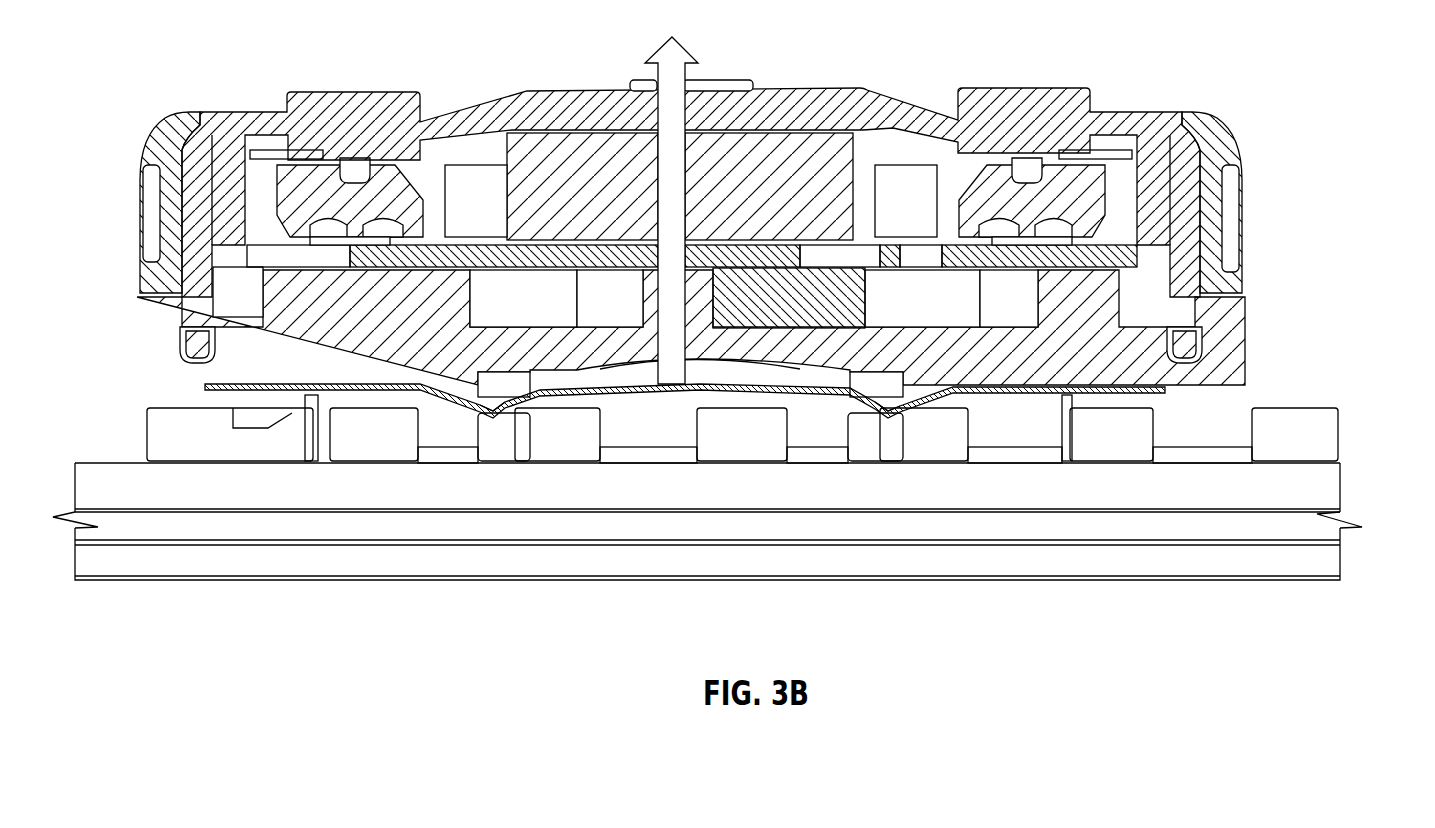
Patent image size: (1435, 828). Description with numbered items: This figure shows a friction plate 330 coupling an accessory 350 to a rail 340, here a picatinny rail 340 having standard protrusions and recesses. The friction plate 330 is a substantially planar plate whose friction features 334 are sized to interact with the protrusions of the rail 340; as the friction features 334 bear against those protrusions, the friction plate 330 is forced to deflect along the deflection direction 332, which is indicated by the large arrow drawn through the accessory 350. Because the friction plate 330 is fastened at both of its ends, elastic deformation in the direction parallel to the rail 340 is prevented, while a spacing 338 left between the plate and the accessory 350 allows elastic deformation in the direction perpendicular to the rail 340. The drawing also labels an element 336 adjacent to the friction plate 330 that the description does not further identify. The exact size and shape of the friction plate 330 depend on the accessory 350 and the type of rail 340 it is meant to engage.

The friction plate 330 is at (1180, 380).
The deflection direction 332 is at (660, 108).
The friction features 334 is at (497, 430).
The flexible membrane / dome sheet 336 is at (1163, 400).
The spacing 338 is at (737, 380).
The rail 340 is at (1329, 484).
The accessory 350 is at (1203, 138).